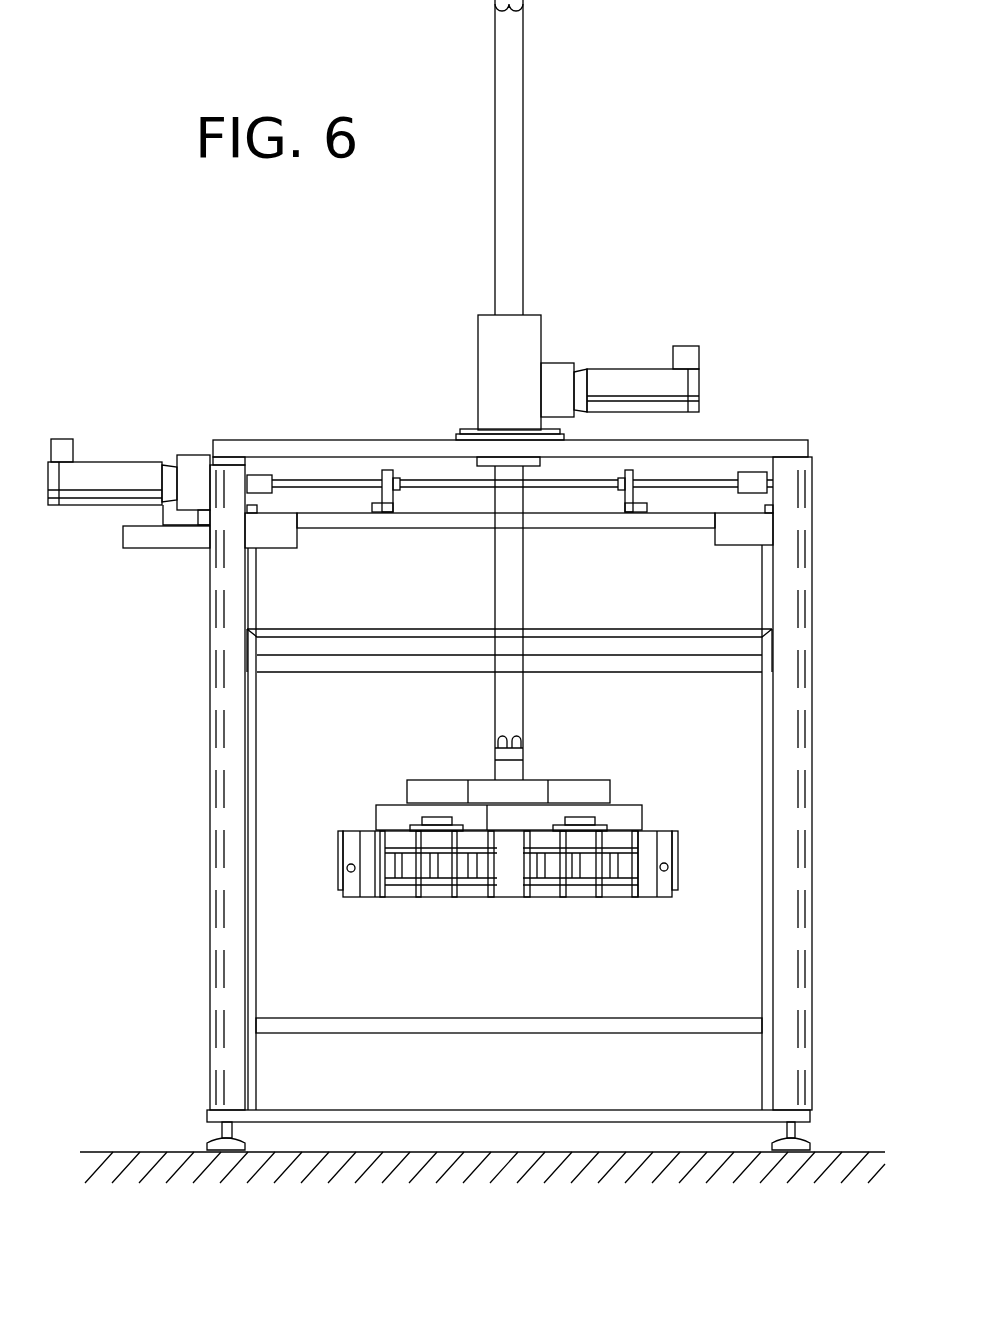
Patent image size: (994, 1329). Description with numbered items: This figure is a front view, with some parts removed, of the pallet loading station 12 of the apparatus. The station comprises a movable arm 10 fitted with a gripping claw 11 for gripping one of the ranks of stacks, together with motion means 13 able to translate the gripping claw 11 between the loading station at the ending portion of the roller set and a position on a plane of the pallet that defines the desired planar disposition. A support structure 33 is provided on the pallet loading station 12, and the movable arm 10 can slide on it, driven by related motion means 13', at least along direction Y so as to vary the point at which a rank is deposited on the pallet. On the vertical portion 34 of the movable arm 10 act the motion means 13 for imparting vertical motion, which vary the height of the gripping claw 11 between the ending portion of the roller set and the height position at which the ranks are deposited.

The movable arm 10 is at (548, 352).
The claw 11 is at (367, 778).
The pallet loading station 12 is at (245, 362).
The motion means 13 is at (466, 358).
The motion means 13' is at (120, 514).
The support structure 33 is at (790, 740).
The vertical portion 34 is at (509, 583).